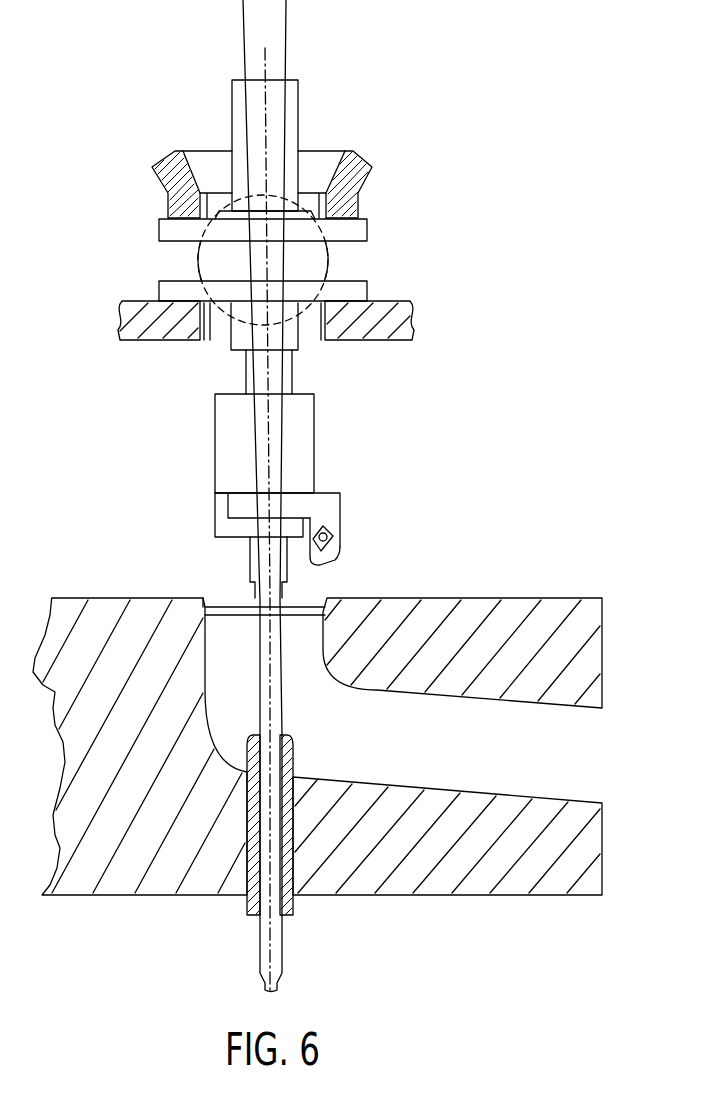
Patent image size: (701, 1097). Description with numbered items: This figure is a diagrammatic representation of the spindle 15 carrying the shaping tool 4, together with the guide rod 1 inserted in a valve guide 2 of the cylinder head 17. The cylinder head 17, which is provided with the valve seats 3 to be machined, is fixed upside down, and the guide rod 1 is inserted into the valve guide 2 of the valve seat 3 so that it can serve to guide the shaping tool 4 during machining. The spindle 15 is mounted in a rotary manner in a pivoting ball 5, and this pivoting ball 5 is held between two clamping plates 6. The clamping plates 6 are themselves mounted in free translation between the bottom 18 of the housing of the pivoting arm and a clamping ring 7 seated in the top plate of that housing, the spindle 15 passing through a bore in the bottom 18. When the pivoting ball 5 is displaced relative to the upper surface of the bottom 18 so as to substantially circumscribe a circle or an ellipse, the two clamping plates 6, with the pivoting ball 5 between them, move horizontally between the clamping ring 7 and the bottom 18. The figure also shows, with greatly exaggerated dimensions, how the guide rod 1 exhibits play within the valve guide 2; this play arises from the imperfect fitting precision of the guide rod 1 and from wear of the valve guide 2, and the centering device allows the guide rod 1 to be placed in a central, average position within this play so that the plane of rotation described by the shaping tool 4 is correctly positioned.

The guide rod 1 is at (273, 695).
The valve guide 2 is at (293, 907).
The valve seat 3 is at (205, 597).
The shaping tool 4 is at (323, 553).
The pivoting ball 5 is at (323, 253).
The clamping plates 6 is at (360, 232).
The clamping ring 7 is at (366, 180).
The spindle 15 is at (298, 438).
The cylinder head 17 is at (175, 868).
The bottom 18 is at (390, 340).